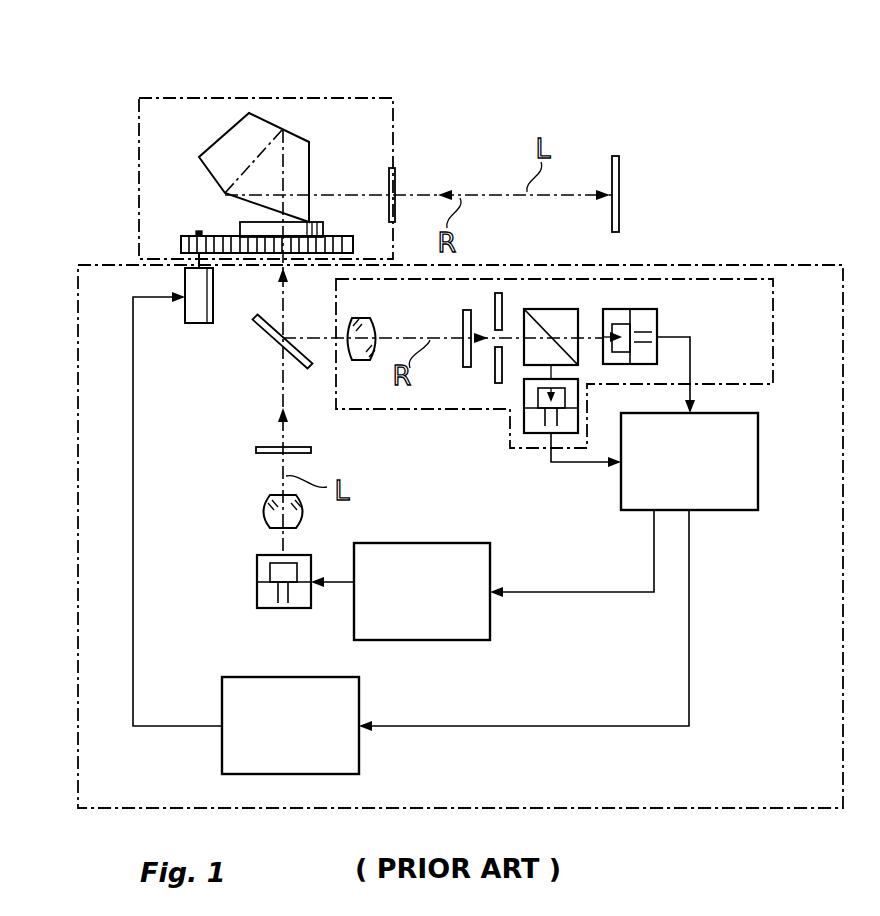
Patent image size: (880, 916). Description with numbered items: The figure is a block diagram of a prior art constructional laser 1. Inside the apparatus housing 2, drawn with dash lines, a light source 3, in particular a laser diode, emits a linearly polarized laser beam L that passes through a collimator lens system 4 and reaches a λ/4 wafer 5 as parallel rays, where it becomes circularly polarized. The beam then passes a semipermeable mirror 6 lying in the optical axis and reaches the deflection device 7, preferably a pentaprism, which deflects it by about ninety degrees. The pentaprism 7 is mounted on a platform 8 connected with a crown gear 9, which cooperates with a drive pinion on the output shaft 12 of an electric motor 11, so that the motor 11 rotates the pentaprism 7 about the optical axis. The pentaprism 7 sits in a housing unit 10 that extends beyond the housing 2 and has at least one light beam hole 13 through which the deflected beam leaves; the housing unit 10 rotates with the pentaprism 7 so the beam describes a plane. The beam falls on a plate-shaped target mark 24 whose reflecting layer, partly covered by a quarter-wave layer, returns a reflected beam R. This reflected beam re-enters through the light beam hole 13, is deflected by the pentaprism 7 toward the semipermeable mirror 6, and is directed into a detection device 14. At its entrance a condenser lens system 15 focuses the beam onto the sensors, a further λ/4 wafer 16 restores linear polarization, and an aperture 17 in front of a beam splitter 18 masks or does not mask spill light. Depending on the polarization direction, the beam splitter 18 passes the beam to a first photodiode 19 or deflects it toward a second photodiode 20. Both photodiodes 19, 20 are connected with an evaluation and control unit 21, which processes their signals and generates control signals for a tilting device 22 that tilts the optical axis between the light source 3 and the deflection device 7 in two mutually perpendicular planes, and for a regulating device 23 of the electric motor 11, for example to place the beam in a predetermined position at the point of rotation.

The constructional laser 1 is at (448, 90).
The housing 2 is at (78, 641).
The light source 3 is at (257, 593).
The collimator lens system 4 is at (262, 512).
The λ/4 wafer 5 is at (270, 447).
The semipermeable mirror 6 is at (258, 318).
The deflection device 7 is at (230, 130).
The platform 8 is at (314, 222).
The crown gear 9 is at (353, 245).
The housing unit 10 is at (263, 97).
The electric motor 11 is at (185, 280).
The output shaft 12 is at (180, 242).
The light beam hole 13 is at (396, 172).
The detection device 14 is at (714, 279).
The condenser lens system 15 is at (378, 330).
The λ/4 wafer 16 is at (469, 310).
The aperture 17 is at (500, 293).
The beam splitter 18 is at (565, 309).
The first photodiode 19 is at (622, 309).
The second photodiode 20 is at (524, 420).
The evaluation and control unit 21 is at (745, 511).
The tilting device 22 is at (490, 628).
The regulating device 23 is at (359, 752).
The target mark 24 is at (620, 170).